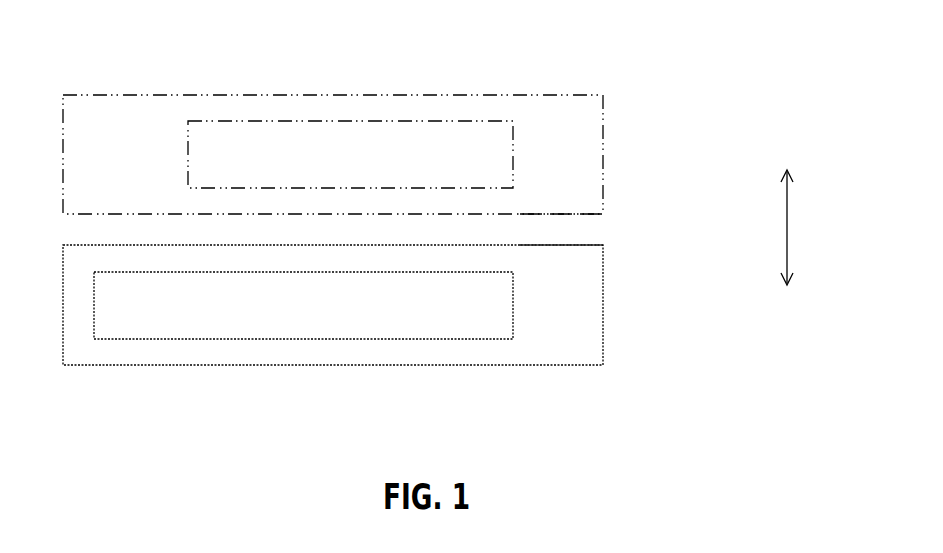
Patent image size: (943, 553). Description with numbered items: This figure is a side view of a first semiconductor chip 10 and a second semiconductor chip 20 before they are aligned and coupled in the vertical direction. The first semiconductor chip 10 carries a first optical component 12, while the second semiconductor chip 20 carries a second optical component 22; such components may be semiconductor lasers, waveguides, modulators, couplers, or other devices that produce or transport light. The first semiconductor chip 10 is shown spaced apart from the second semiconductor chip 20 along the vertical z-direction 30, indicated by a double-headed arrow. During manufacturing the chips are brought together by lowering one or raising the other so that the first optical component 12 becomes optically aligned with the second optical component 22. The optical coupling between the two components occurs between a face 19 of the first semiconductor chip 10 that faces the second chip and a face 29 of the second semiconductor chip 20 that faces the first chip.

The first semiconductor chip 10 is at (603, 118).
The first optical component 12 is at (310, 121).
The face of first semiconductor chip 19 is at (570, 214).
The second semiconductor chip 20 is at (603, 342).
The second optical component 22 is at (250, 340).
The face of second semiconductor chip 29 is at (590, 245).
The z-direction 30 is at (787, 228).